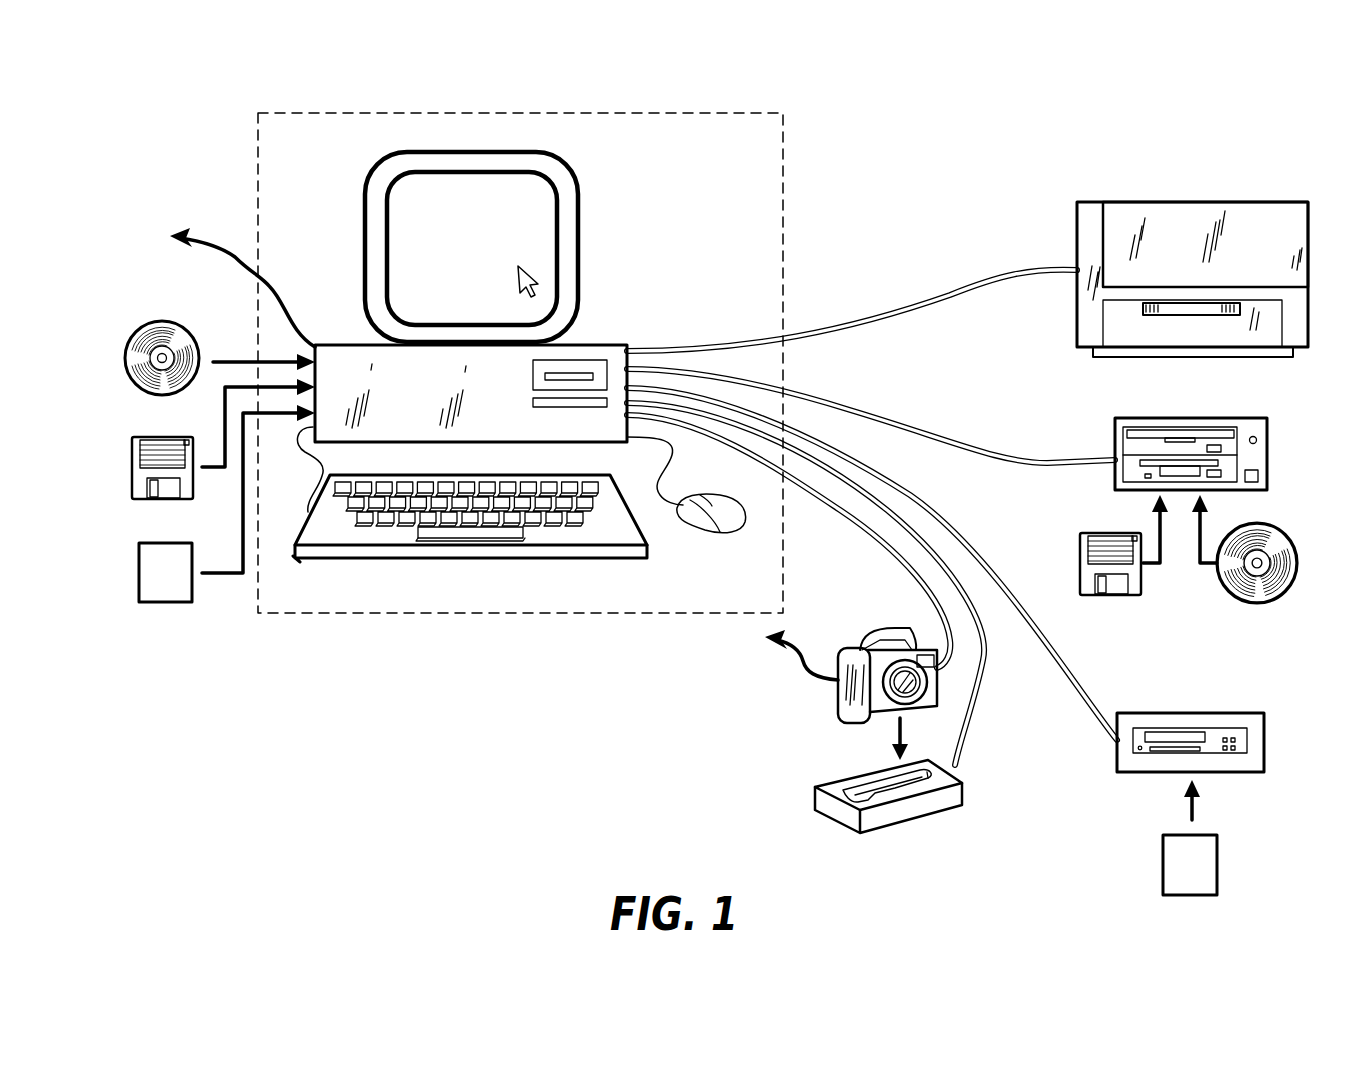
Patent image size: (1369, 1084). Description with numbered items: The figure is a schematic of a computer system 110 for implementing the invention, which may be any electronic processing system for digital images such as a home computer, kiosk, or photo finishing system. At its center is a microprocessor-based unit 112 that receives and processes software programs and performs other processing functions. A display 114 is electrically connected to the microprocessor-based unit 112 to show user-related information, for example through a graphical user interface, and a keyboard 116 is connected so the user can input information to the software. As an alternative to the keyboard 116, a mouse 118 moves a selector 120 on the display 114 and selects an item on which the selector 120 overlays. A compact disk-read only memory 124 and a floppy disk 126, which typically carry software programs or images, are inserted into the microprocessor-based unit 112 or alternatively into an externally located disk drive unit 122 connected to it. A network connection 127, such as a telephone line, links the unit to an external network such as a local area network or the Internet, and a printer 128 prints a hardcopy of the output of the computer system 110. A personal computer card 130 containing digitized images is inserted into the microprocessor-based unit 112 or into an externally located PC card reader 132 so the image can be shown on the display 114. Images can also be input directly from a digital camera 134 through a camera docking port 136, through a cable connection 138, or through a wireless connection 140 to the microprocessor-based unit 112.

The computer system 110 is at (257, 163).
The microprocessor-based unit 112 is at (346, 344).
The display 114 is at (378, 162).
The keyboard 116 is at (388, 560).
The mouse 118 is at (698, 522).
The selector 120 is at (532, 280).
The externally located disk drive unit 122 is at (1268, 450).
The compact disk-read only memory (CD-ROM) 124 is at (124, 360).
The floppy disk 126 is at (131, 474).
The network connection 127 is at (220, 260).
The printer 128 is at (1175, 201).
The personal computer card (PC card) 130 is at (138, 577).
The PC card reader 132 is at (1265, 742).
The digital camera 134 is at (888, 628).
The camera docking port 136 is at (813, 800).
The cable connection 138 is at (877, 541).
The wireless connection 140 is at (802, 670).